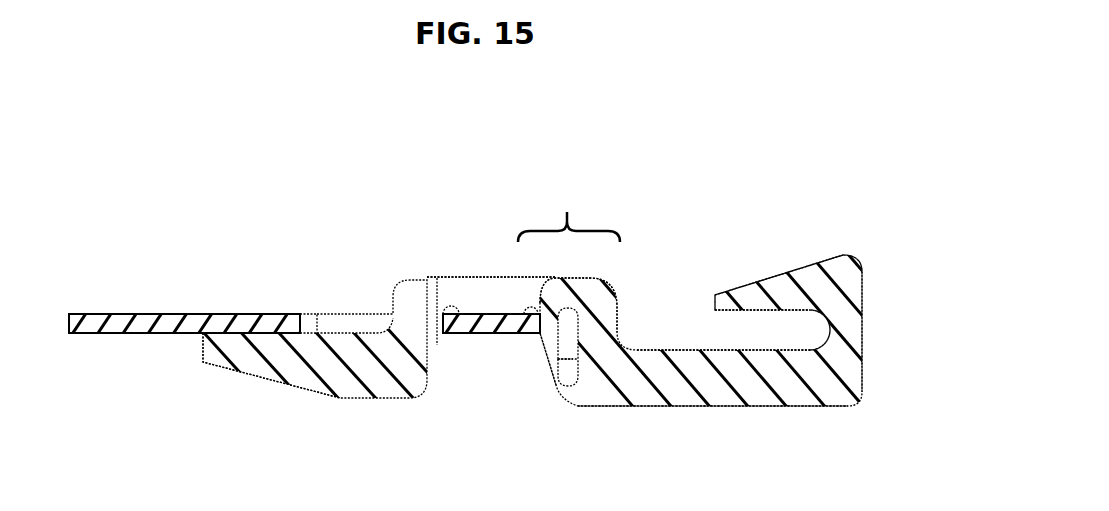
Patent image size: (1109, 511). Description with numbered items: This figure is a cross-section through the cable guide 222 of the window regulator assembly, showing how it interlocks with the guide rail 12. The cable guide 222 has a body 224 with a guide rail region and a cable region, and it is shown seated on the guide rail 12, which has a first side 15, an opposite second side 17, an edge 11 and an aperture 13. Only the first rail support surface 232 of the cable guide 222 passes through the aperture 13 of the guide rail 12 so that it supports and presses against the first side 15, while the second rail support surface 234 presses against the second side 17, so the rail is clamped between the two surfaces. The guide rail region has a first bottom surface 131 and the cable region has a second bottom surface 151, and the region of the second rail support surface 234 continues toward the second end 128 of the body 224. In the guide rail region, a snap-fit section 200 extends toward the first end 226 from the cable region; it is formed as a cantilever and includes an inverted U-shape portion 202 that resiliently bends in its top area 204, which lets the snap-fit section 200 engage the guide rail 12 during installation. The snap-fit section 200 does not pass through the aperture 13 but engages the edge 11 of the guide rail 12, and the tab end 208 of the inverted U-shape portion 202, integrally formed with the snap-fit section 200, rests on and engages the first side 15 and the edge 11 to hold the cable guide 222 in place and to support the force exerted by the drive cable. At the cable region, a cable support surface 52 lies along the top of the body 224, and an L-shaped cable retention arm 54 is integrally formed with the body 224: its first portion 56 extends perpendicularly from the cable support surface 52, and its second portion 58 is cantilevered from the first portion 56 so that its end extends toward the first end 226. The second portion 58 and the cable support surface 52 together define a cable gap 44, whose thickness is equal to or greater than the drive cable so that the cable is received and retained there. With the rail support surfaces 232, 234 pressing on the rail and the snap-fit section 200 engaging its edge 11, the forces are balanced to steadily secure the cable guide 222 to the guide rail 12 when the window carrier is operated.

The guide rail 12 is at (140, 317).
The second side of the guide rail 17 is at (175, 315).
The first rail support surface 232 is at (267, 317).
The aperture of the guide rail 13 is at (355, 310).
The first side of the guide rail 15 is at (165, 335).
The first end 226 is at (202, 347).
The first bottom surface 131 is at (342, 400).
The second rail support surface 234 is at (485, 340).
The tab end 208 is at (543, 345).
The edge of the guide rail 11 is at (560, 338).
The body 224 is at (632, 370).
The inverted U-shape portion 202 is at (613, 290).
The top area of the inverted U-shape portion 204 is at (562, 276).
The snap-fit section 200 is at (569, 209).
The cable support surface 52 is at (712, 348).
The second bottom surface 151 is at (793, 408).
The second end of the body 128 is at (860, 353).
The cable retention arm 54 is at (847, 268).
The second portion of the cable retention arm 58 is at (790, 290).
The cable gap 44 is at (803, 323).
The first portion of the cable retention arm 56 is at (845, 323).
The cable guide 222 is at (649, 136).